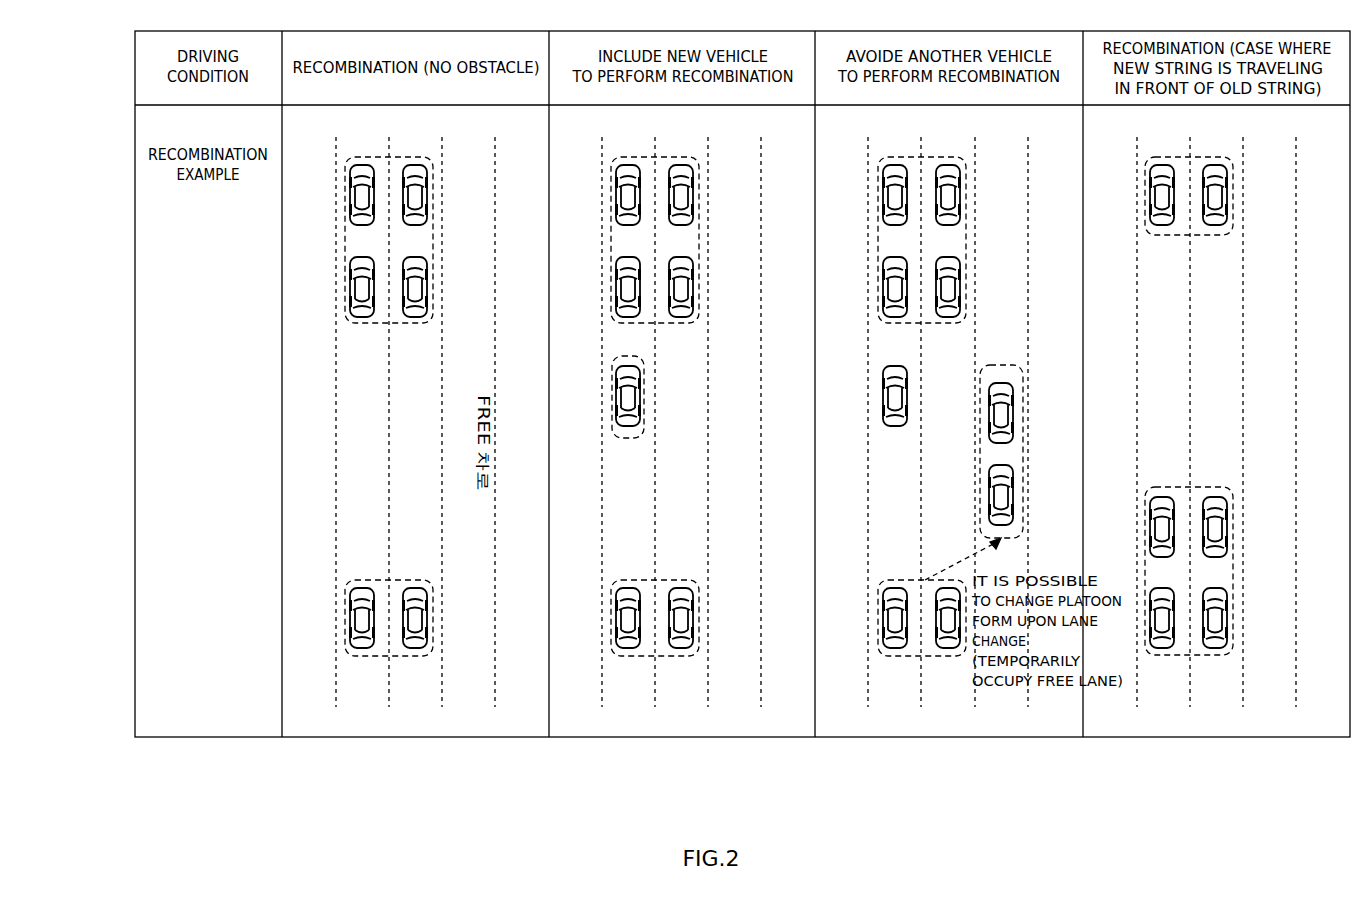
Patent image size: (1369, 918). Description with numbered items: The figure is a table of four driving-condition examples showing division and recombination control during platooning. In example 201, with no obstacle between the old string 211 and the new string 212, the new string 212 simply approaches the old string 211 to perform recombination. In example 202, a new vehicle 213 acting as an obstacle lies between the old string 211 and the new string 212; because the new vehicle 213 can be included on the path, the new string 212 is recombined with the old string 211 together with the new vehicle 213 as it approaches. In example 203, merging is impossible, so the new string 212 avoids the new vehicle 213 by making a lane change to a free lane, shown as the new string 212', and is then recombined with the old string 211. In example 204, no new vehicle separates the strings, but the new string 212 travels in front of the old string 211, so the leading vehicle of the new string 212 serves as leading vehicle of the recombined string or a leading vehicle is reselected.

The recombination example with no obstacle 201 is at (416, 764).
The recombination example including a new vehicle 202 is at (683, 764).
The recombination example avoiding another vehicle 203 is at (949, 764).
The recombination example with new string traveling in front of old string 204 is at (1217, 764).
The old string 211 is at (433, 239).
The new string 212 is at (821, 406).
The new string after lane change 212' is at (970, 451).
The new vehicle 213 is at (644, 397).